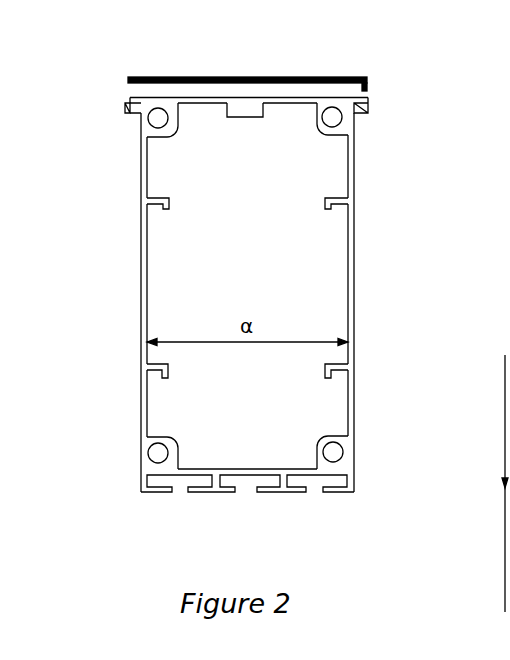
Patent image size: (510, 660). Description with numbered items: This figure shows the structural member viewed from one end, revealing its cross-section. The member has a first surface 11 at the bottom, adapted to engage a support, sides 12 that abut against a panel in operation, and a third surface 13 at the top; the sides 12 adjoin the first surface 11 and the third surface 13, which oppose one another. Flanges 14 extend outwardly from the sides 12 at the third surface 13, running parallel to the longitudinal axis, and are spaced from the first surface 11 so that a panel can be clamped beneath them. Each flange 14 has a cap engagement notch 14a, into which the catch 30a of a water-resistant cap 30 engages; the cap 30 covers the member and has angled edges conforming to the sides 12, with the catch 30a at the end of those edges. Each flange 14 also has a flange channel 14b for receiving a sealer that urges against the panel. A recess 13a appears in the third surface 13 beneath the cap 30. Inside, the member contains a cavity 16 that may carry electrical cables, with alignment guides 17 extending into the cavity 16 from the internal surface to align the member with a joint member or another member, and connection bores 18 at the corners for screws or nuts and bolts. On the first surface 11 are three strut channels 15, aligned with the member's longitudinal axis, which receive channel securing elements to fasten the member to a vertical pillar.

The first surface 11 is at (250, 310).
The sides 12 is at (140, 258).
The third surface 13 is at (152, 90).
The recess in top wall 13a is at (243, 110).
The flanges 14 is at (126, 106).
The cap engagement notch 14a is at (371, 109).
The flange channel 14b is at (127, 109).
The strut channels 15 is at (313, 482).
The cavity 16 is at (258, 267).
The alignment guides 17 is at (332, 200).
The connection bores 18 is at (333, 446).
The water-resistant cap 30 is at (332, 77).
The catch 30a is at (370, 87).